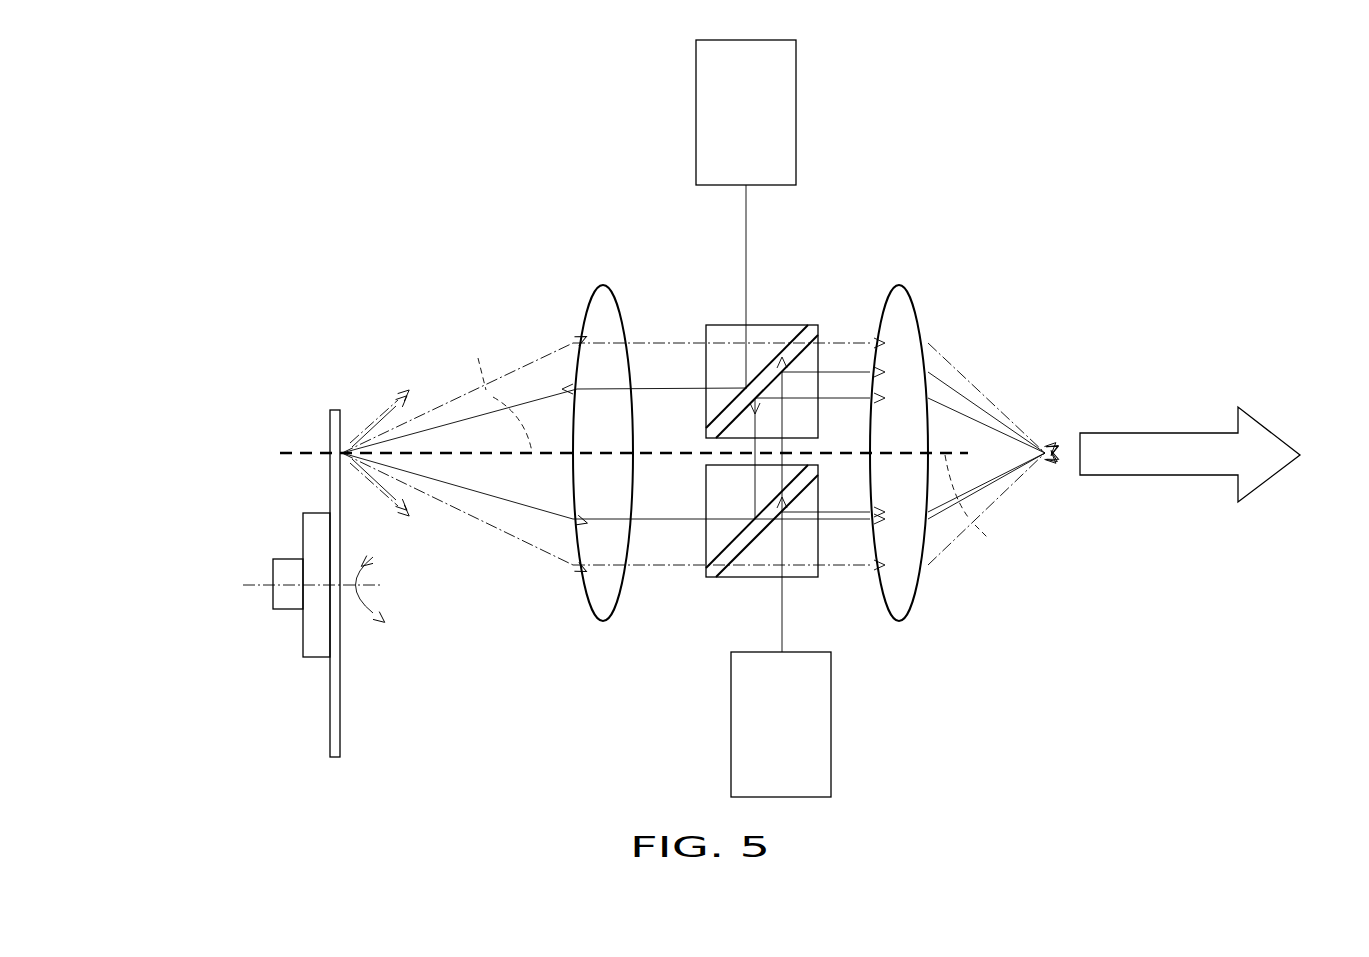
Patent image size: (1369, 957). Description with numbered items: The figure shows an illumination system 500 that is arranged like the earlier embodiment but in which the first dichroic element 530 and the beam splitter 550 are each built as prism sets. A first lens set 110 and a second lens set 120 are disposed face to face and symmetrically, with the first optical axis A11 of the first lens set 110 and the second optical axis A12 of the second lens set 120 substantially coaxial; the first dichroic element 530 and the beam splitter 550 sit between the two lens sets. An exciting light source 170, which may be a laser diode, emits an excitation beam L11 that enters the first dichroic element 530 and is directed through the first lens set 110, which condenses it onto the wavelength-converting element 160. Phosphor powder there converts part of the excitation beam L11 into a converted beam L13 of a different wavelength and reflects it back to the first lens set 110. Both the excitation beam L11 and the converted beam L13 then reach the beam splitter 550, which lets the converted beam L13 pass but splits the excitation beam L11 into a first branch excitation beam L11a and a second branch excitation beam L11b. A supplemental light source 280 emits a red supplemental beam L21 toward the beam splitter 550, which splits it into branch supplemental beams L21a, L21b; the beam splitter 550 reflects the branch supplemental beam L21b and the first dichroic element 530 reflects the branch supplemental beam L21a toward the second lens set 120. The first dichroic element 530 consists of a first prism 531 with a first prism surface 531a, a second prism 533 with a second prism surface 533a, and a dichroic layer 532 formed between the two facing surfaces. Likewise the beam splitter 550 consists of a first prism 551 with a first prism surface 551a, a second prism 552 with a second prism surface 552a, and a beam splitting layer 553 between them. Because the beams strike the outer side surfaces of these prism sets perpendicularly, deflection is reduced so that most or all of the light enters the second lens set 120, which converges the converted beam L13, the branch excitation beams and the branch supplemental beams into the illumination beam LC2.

The illumination system 500 is at (284, 171).
The wavelength-converting element 160 is at (330, 427).
The first lens set 110 is at (601, 272).
The second lens set 120 is at (897, 272).
The exciting light source 170 is at (765, 130).
The supplemental light source 280 is at (799, 740).
The first dichroic element 530 is at (758, 337).
The first prism 531 is at (783, 330).
The first prism surface 531a is at (767, 365).
The dichroic layer 532 is at (808, 325).
The second prism 533 is at (818, 368).
The second prism surface 533a is at (810, 348).
The beam splitter 550 is at (725, 560).
The first prism 551 is at (707, 527).
The first prism surface 551a is at (722, 551).
The second prism 552 is at (727, 577).
The second prism surface 552a is at (726, 570).
The beam splitting layer 553 is at (707, 575).
The excitation beam L11 is at (747, 212).
The first branch excitation beam L11a is at (840, 521).
The second branch excitation beam L11b is at (755, 448).
The converted beam L13 is at (441, 407).
The supplemental beam L21 is at (783, 622).
The branch supplemental beam L21a is at (800, 450).
The branch supplemental beam L21b is at (918, 520).
The first optical axis A11 is at (496, 389).
The second optical axis A12 is at (982, 512).
The illumination beam LC2 is at (1165, 445).